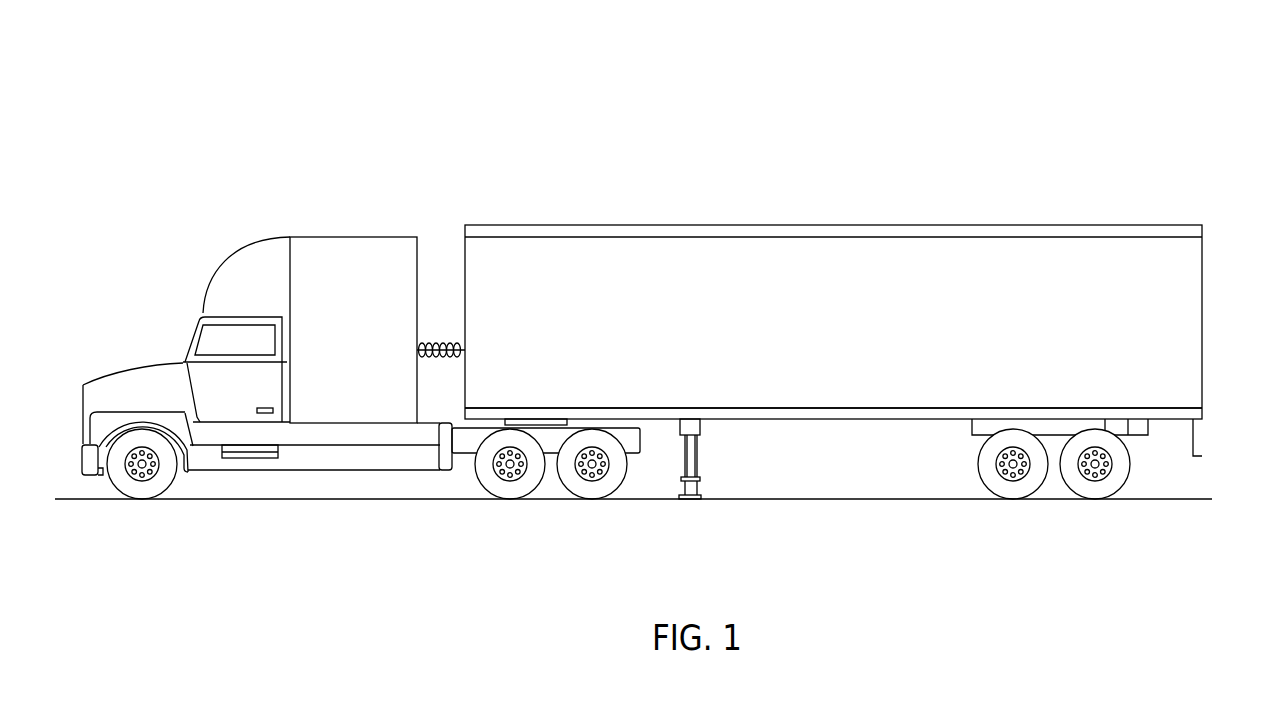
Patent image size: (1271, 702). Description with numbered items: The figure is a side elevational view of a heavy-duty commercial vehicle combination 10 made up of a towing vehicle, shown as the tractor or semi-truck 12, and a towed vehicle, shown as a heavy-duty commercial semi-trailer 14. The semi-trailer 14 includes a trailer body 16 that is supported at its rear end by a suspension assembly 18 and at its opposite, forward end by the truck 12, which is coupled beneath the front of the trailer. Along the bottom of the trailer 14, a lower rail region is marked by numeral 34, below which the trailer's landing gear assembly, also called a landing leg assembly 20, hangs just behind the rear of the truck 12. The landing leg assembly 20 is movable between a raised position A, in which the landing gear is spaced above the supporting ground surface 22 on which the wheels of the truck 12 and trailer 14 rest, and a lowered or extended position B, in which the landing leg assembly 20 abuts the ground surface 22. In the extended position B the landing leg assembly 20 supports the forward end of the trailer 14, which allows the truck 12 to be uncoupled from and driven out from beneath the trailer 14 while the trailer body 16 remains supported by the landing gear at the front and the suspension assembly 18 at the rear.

The vehicle combination 10 is at (660, 294).
The semi-truck 12 is at (287, 210).
The semi-trailer 14 is at (865, 320).
The trailer body 16 is at (1012, 224).
The suspension assembly 18 is at (1162, 465).
The landing gear assembly 20 is at (714, 461).
The supporting ground surface 22 is at (878, 499).
The trailer floor 34 is at (884, 414).
The raised position A is at (698, 478).
The lowered or extended position B is at (683, 492).